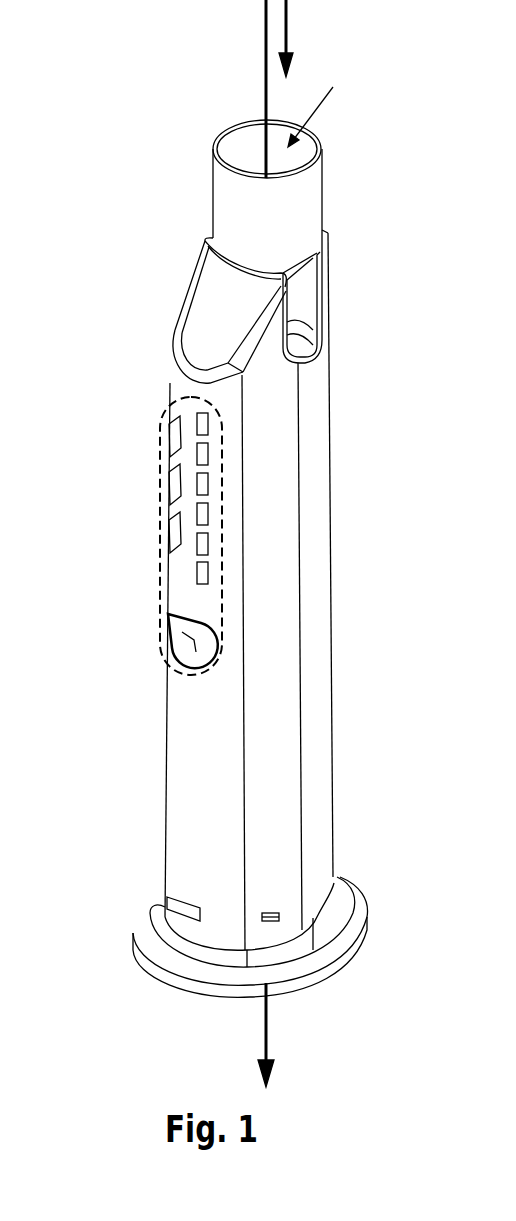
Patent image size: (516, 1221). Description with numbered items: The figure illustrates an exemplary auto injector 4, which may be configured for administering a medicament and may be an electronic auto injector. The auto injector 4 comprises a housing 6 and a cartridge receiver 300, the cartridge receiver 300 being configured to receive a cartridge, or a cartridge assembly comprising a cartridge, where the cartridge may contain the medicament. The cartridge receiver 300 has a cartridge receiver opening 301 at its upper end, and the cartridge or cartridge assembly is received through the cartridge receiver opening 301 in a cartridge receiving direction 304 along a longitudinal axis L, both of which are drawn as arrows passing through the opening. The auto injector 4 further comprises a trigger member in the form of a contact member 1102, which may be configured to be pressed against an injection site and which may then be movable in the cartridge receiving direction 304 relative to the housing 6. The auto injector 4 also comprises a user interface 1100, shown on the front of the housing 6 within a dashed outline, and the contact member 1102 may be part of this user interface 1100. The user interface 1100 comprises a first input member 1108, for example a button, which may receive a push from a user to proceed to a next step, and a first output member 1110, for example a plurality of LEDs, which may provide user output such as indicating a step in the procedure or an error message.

The auto injector 4 is at (256, 543).
The housing 6 is at (332, 585).
The longitudinal axis L is at (262, 82).
The cartridge receiving direction 304 is at (287, 13).
The cartridge receiver 300 is at (335, 87).
The cartridge receiver opening 301 is at (384, 116).
The contact member 1102 is at (212, 192).
The user interface 1100 is at (180, 673).
The first output member 1110 is at (177, 537).
The first input member 1108 is at (180, 627).